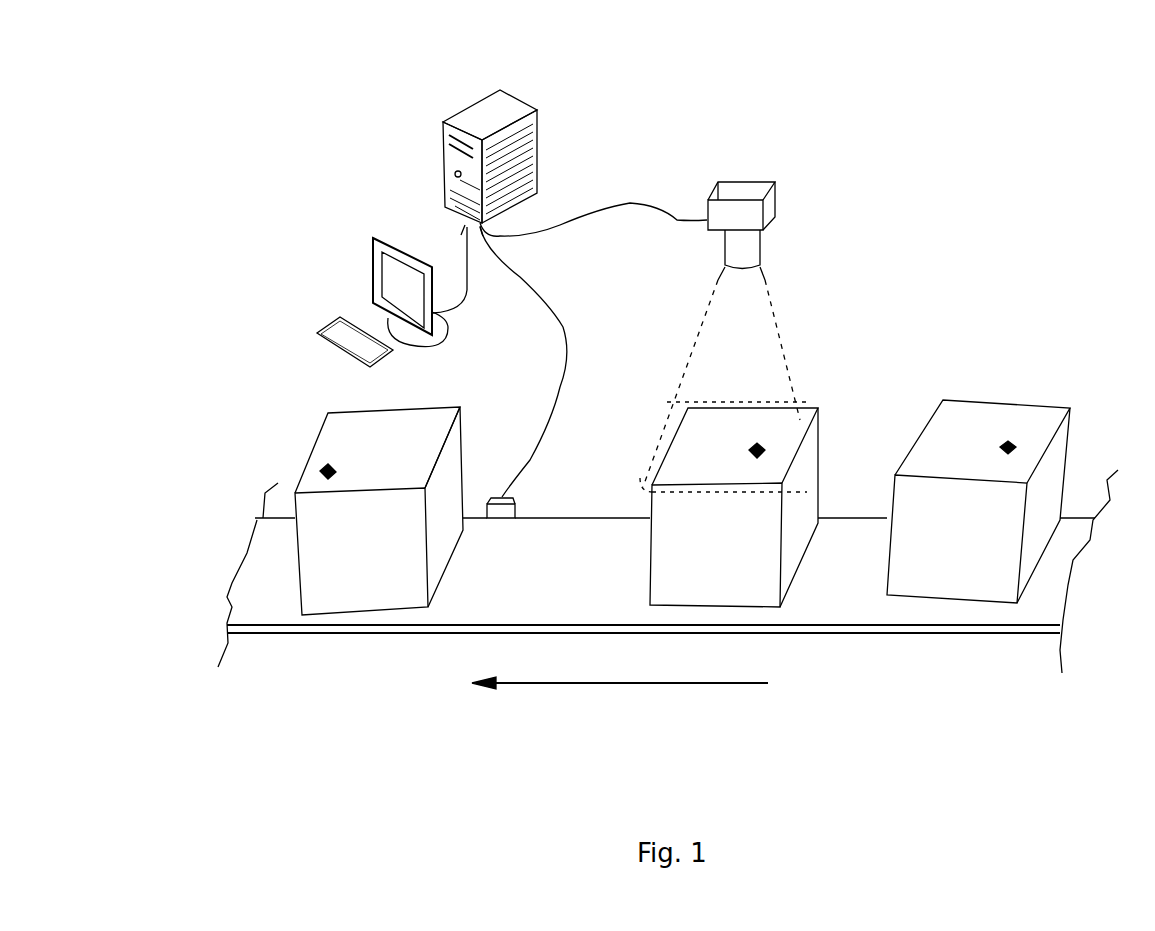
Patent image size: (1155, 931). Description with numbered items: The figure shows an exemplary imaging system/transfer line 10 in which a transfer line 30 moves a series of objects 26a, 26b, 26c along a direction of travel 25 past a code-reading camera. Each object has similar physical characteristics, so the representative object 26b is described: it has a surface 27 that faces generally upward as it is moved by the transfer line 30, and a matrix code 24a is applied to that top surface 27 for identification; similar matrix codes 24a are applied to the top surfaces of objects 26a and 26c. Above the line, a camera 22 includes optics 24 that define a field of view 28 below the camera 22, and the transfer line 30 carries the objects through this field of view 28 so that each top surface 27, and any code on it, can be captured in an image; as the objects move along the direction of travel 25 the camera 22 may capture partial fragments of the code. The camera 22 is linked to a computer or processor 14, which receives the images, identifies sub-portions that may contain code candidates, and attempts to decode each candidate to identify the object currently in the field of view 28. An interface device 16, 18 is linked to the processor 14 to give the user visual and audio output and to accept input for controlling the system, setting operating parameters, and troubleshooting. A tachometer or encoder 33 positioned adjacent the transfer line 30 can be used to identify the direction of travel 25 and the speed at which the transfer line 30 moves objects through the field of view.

The imaging system/transfer line 10 is at (915, 130).
The computer or processor 14 is at (503, 115).
The interface device 16 is at (372, 240).
The interface device 18 is at (318, 333).
The camera 22 is at (740, 190).
The optics 24 is at (742, 255).
The matrix code 24a is at (322, 467).
The direction of travel 25 is at (702, 685).
The object 26a is at (430, 417).
The object 26b is at (800, 420).
The object 26c is at (948, 420).
The surface 27 is at (397, 418).
The field of view 28 is at (653, 445).
The transfer line 30 is at (570, 537).
The tachometer (encoder) 33 is at (515, 497).